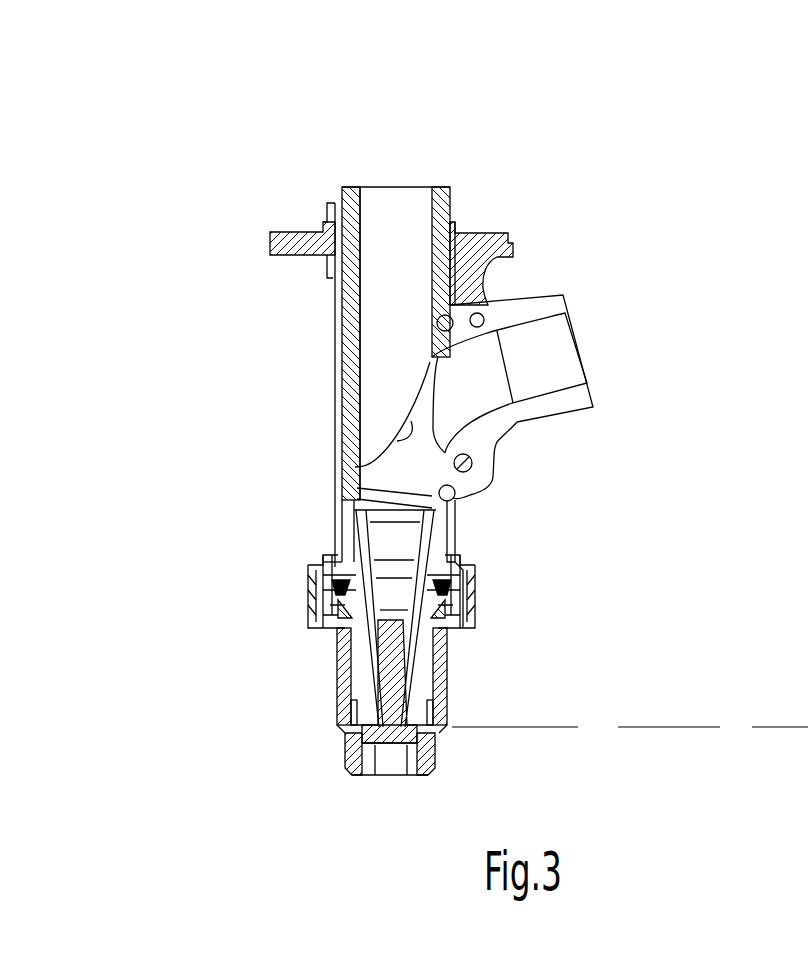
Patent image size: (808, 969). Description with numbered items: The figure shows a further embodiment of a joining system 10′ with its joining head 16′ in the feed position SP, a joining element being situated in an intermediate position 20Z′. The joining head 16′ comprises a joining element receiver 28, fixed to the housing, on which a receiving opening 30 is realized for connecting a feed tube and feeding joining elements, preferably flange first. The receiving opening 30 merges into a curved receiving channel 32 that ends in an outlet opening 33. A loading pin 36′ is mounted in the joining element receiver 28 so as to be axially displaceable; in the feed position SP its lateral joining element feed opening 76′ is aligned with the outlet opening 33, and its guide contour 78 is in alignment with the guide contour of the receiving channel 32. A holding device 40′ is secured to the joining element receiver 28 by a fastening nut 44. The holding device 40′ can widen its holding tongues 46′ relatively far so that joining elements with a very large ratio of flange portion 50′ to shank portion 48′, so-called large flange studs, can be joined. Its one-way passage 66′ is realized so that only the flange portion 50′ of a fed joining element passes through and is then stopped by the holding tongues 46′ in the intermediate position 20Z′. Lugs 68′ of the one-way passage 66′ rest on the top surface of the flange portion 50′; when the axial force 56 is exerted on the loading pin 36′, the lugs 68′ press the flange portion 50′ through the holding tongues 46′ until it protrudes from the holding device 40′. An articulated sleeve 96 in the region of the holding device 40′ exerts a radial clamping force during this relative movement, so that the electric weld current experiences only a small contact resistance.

The joining system 10′ is at (263, 163).
The axial force 56 is at (397, 151).
The loading pin 36′ is at (403, 198).
The joining element receiver 28 is at (487, 243).
The joining head 16′ is at (567, 246).
The receiving channel 32 is at (558, 338).
The receiving opening 30 is at (588, 361).
The outlet opening 33 is at (430, 388).
The guide contour 78 is at (409, 420).
The lateral joining element feed opening 76′ is at (438, 413).
The lugs 68′ is at (365, 545).
The one-way passage 66′ is at (478, 556).
The feed position SP is at (623, 577).
The fastening nut 44 is at (317, 628).
The holding device 40′ is at (510, 626).
The shank portion 48′ is at (370, 687).
The articulated sleeve 96 is at (430, 683).
The flange portion 50′ is at (347, 732).
The holding tongues 46′ is at (437, 748).
The intermediate position 20Z′ is at (386, 737).